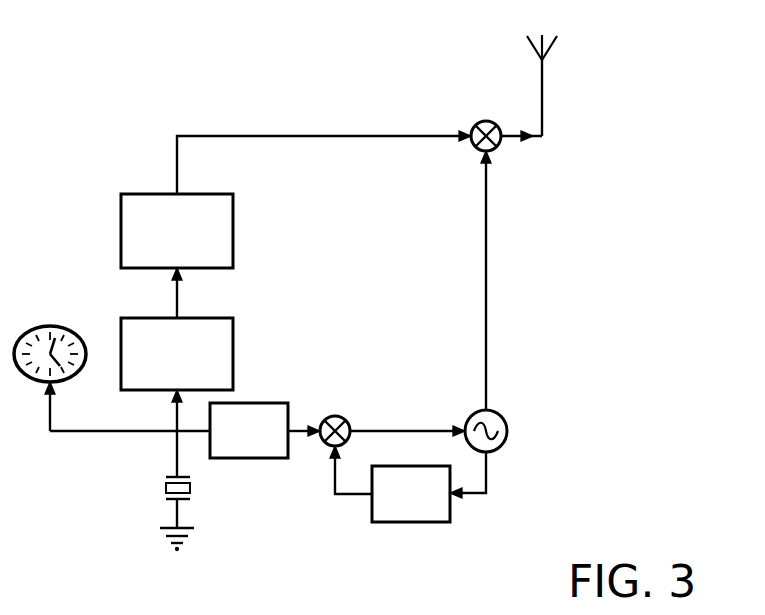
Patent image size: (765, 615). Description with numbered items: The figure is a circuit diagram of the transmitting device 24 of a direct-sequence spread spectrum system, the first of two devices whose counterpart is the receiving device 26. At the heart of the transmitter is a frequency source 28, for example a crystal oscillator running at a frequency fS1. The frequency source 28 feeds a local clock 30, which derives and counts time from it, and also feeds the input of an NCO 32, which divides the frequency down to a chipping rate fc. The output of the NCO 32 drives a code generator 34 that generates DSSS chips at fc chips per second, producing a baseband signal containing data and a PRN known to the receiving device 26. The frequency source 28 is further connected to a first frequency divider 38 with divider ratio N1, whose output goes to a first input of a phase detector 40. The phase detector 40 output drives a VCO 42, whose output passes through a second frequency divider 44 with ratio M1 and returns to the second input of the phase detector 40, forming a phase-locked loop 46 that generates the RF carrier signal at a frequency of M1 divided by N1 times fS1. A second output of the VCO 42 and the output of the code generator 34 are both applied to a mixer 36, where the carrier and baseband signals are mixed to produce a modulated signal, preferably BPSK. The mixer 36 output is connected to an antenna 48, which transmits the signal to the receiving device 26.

The transmitting device 24 is at (219, 100).
The receiving device 26 is at (326, 612).
The frequency source 28 is at (193, 489).
The local clock 30 is at (50, 326).
The NCO (Numerically Controlled Oscillator) 32 is at (233, 333).
The code generator 34 is at (233, 232).
The mixer 36 is at (486, 121).
The first frequency divider 38 is at (276, 403).
The phase detector 40 is at (335, 416).
The VCO (Voltage Controlled Oscillator) 42 is at (507, 431).
The second frequency divider 44 is at (411, 522).
The phase-locked loop (PLL) 46 is at (510, 472).
The antenna 48 is at (542, 86).